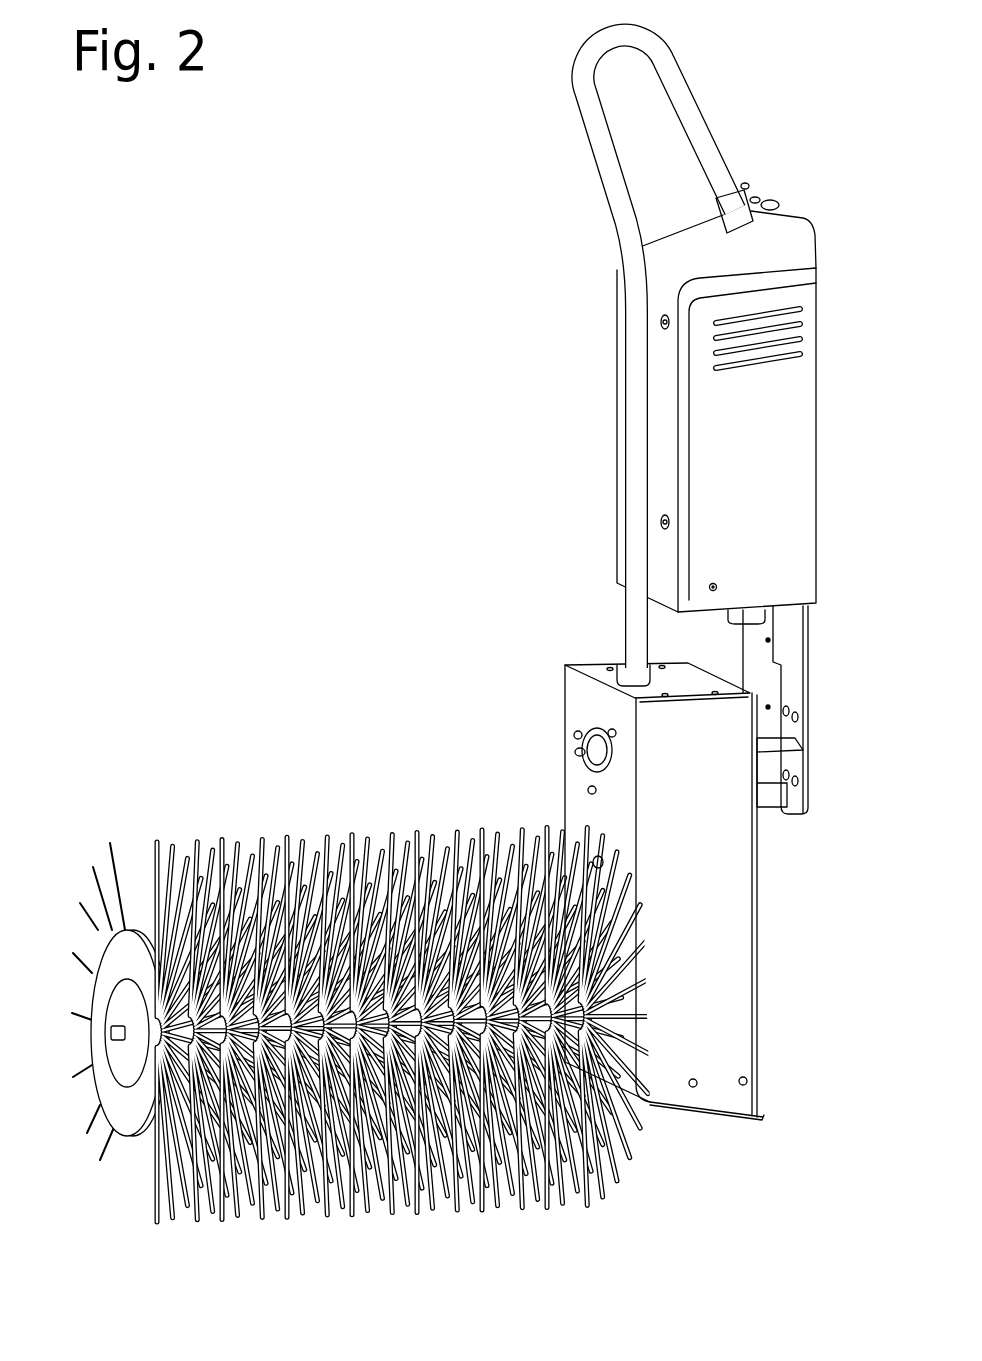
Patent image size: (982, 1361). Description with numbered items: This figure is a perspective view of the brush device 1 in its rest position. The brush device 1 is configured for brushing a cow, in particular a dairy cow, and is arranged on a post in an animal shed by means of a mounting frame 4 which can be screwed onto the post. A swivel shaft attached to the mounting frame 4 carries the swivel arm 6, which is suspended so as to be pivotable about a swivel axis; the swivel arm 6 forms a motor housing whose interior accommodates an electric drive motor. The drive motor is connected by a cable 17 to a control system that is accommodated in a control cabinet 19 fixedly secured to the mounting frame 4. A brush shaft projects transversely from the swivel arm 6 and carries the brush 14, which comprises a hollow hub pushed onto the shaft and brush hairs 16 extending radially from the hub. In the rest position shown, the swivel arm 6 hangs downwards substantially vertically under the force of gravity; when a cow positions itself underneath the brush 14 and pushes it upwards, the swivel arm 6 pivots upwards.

The brush device 1 is at (548, 583).
The mounting frame 4 is at (793, 643).
The swivel arm 6 is at (702, 960).
The brush 14 is at (124, 818).
The brush hairs 16 is at (317, 827).
The cable 17 is at (613, 181).
The control cabinet 19 is at (774, 418).